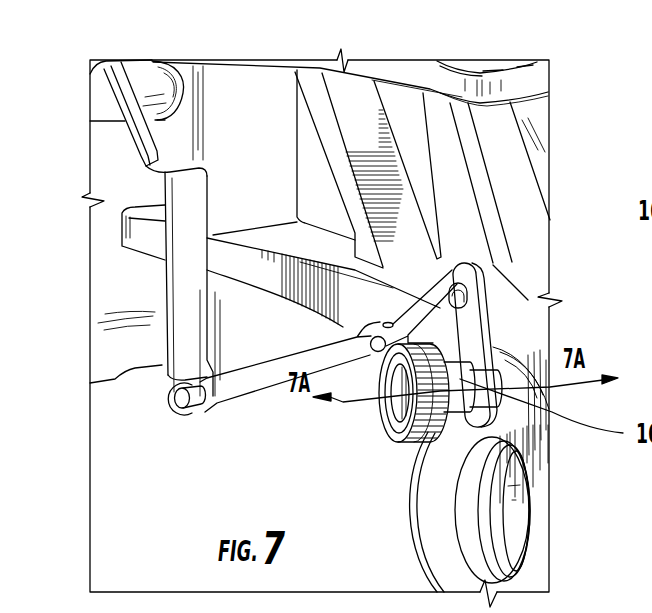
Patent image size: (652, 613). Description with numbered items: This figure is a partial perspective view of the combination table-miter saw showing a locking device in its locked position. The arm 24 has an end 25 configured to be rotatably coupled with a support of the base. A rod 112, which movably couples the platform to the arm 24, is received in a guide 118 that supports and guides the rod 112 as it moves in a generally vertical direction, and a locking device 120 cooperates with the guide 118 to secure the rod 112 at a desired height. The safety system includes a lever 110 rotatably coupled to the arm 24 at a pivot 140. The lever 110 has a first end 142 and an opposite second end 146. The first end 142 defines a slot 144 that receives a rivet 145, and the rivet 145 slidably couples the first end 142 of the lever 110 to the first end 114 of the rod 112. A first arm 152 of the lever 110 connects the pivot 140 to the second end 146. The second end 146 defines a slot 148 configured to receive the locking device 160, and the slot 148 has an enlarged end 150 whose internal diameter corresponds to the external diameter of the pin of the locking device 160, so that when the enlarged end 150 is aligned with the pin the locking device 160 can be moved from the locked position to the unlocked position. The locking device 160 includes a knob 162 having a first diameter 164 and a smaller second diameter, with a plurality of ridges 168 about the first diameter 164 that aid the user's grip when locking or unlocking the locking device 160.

The arm 24 is at (503, 188).
The end 25 is at (443, 562).
The lever 110 is at (258, 380).
The rod 112 is at (180, 277).
The first end 114 is at (166, 379).
The guide 118 is at (177, 153).
The locking device 120 is at (100, 95).
The pivot 140 is at (376, 337).
The first end 142 is at (170, 394).
The slot 144 is at (203, 403).
The rivet 145 is at (182, 408).
The second end 146 is at (487, 331).
The slot 148 is at (493, 303).
The enlarged end 150 is at (455, 278).
The first arm 152 is at (430, 313).
The locking device 160 is at (482, 308).
The knob 162 is at (400, 407).
The first diameter 164 is at (443, 430).
The ridges 168 is at (430, 439).